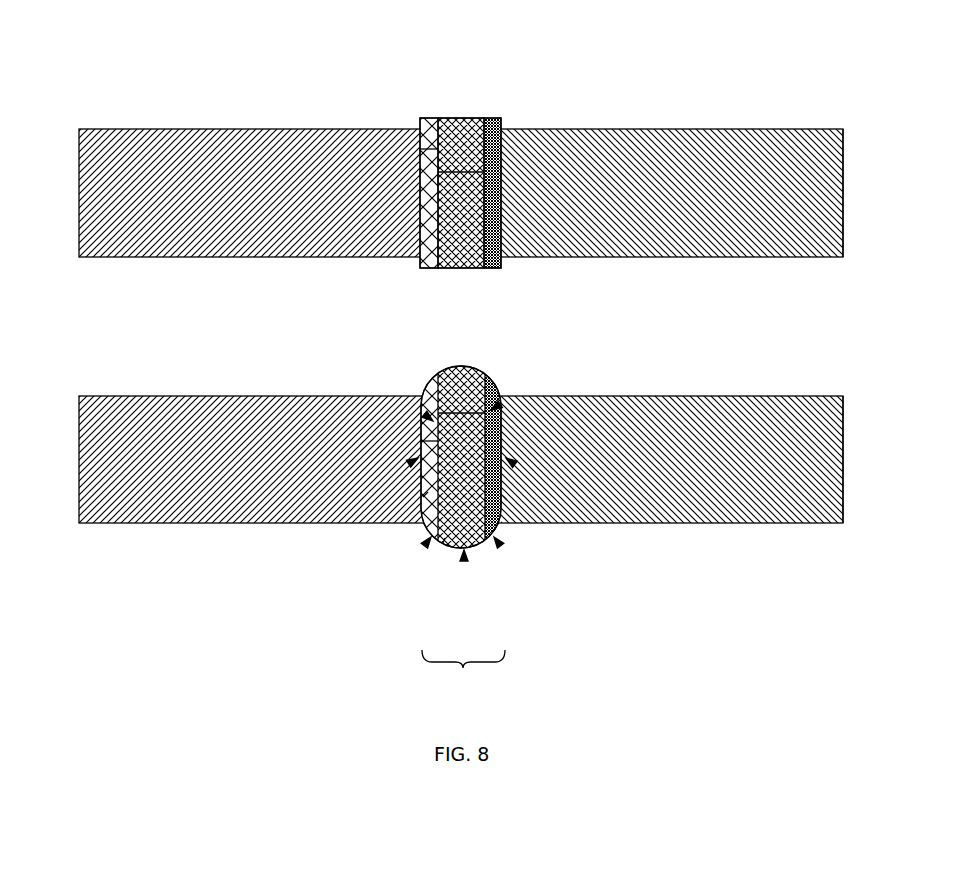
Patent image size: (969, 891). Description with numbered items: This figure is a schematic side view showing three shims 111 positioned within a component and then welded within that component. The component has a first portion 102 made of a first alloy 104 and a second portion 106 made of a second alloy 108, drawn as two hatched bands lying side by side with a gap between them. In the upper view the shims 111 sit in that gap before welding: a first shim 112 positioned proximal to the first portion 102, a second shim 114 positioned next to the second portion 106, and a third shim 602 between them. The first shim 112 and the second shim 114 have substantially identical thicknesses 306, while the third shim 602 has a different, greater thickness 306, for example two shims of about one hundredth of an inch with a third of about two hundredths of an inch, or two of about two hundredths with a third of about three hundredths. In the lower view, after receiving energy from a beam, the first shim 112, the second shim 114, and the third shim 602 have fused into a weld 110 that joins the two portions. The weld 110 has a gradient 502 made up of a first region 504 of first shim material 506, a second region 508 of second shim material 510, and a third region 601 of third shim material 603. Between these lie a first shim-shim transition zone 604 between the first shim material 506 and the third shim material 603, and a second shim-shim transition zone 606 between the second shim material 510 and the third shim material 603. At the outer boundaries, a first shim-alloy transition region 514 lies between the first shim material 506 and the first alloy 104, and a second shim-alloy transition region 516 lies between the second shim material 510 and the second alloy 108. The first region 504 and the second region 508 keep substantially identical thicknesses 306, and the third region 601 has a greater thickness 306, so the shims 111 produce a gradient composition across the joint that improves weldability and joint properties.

The first portion 102 is at (122, 129).
The first alloy 104 is at (197, 142).
The second portion 106 is at (787, 129).
The second alloy 108 is at (682, 140).
The weld 110 is at (495, 342).
The shims 111 is at (461, 140).
The first shim 112 is at (428, 118).
The second shim 114 is at (492, 118).
The thickness 306 is at (420, 127).
The gradient 502 is at (463, 673).
The first region 504 is at (425, 546).
The first shim material 506 is at (423, 497).
The second region 508 is at (501, 548).
The second shim material 510 is at (507, 500).
The first shim-alloy transition region 514 is at (409, 463).
The second shim-alloy transition region 516 is at (514, 464).
The third region 601 is at (465, 562).
The third shim 602 is at (465, 118).
The third shim material 603 is at (443, 543).
The first shim-shim transition zone 604 is at (426, 413).
The second shim-shim transition zone 606 is at (498, 403).